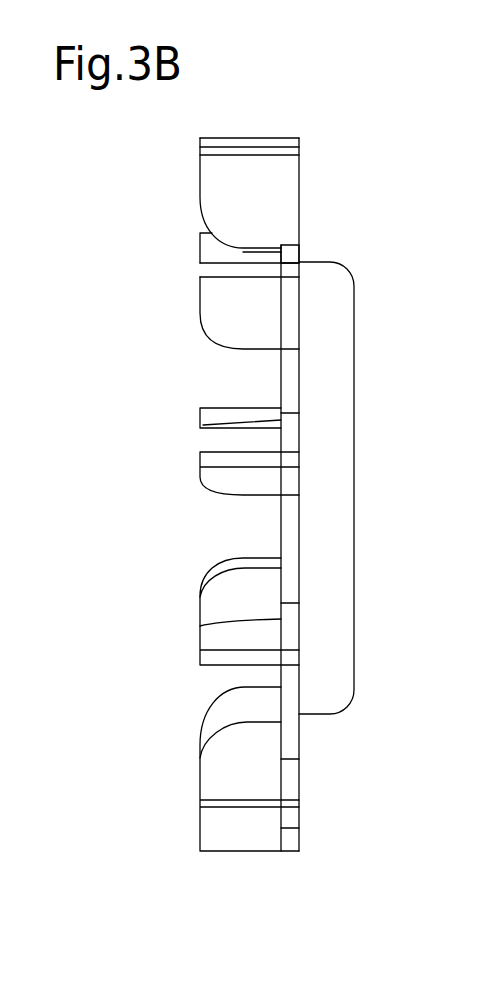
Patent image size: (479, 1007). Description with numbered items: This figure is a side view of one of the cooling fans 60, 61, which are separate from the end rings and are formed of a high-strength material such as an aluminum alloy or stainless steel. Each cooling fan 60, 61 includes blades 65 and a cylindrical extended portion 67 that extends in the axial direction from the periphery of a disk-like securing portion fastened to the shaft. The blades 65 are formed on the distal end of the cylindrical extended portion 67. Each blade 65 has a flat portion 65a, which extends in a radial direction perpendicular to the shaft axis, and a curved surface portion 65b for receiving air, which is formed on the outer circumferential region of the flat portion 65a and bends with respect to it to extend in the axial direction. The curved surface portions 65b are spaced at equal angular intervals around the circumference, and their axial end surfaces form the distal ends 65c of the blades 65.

The cooling fan 60 is at (353, 121).
The cooling fan 61 is at (248, 469).
The blade 65 is at (266, 138).
The flat portion 65a is at (297, 254).
The curved surface portion 65b is at (200, 139).
The distal end 65c is at (200, 156).
The extended portion 67 is at (316, 258).